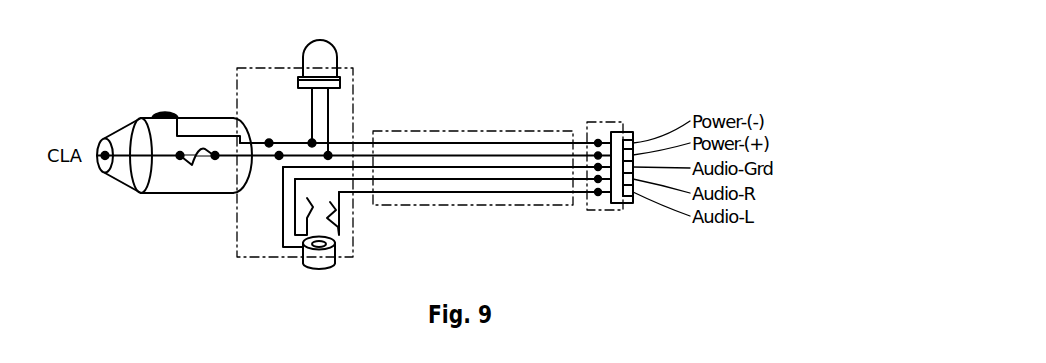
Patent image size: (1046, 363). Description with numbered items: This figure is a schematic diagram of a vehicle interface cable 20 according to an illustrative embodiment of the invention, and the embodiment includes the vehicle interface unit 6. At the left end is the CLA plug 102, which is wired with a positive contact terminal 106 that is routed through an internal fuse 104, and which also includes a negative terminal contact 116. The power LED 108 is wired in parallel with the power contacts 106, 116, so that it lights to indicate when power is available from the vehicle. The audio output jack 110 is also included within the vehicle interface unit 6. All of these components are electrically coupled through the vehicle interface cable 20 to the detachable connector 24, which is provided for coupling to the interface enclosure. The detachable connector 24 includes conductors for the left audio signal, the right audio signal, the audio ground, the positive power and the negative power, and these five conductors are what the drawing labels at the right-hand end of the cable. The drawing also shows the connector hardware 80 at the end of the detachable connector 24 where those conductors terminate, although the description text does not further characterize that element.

The vehicle interface unit 6 is at (234, 234).
The vehicle interface cable 20 is at (466, 131).
The detachable connector 24 is at (602, 122).
The connector 80 is at (635, 203).
The CLA plug 102 is at (129, 118).
The internal fuse 104 is at (192, 166).
The positive contact terminal 106 is at (96, 162).
The power LED 108 is at (338, 54).
The audio output jack 110 is at (333, 265).
The negative terminal contact 116 is at (158, 114).